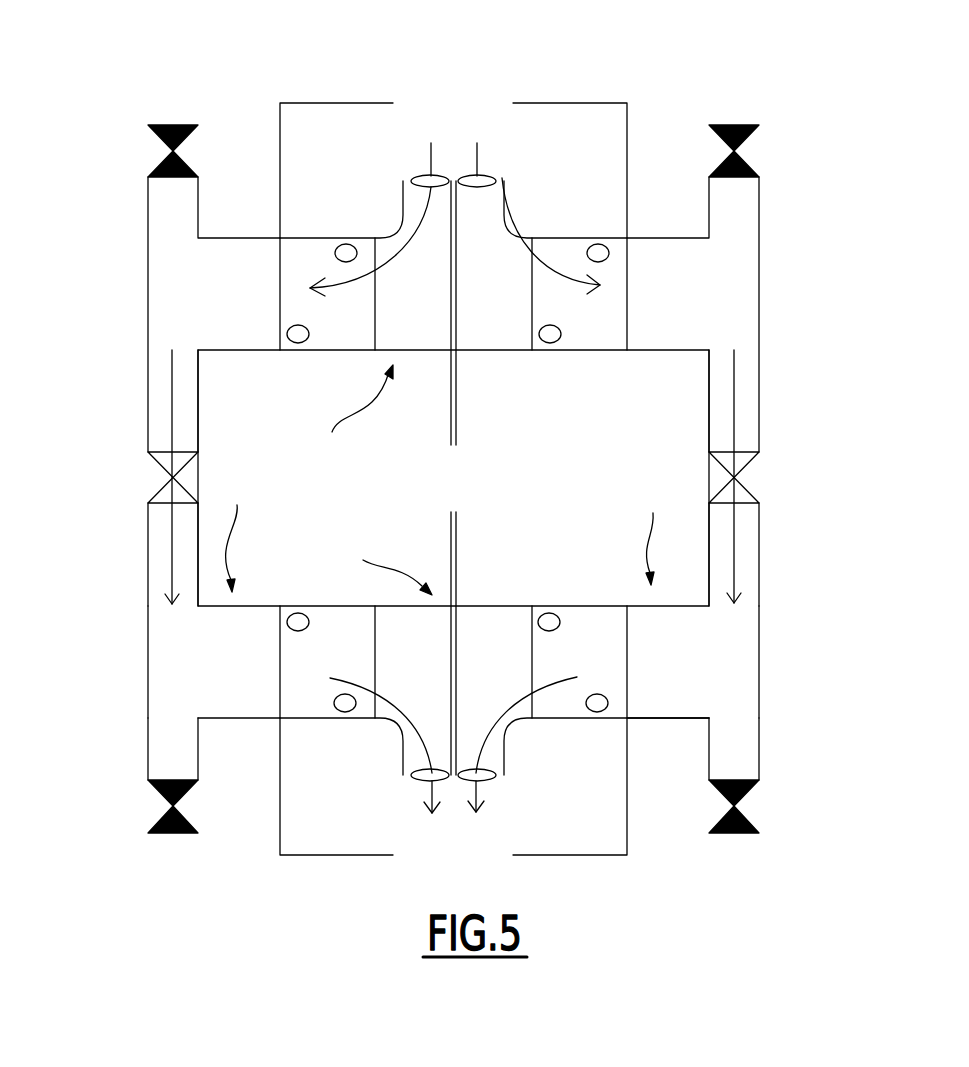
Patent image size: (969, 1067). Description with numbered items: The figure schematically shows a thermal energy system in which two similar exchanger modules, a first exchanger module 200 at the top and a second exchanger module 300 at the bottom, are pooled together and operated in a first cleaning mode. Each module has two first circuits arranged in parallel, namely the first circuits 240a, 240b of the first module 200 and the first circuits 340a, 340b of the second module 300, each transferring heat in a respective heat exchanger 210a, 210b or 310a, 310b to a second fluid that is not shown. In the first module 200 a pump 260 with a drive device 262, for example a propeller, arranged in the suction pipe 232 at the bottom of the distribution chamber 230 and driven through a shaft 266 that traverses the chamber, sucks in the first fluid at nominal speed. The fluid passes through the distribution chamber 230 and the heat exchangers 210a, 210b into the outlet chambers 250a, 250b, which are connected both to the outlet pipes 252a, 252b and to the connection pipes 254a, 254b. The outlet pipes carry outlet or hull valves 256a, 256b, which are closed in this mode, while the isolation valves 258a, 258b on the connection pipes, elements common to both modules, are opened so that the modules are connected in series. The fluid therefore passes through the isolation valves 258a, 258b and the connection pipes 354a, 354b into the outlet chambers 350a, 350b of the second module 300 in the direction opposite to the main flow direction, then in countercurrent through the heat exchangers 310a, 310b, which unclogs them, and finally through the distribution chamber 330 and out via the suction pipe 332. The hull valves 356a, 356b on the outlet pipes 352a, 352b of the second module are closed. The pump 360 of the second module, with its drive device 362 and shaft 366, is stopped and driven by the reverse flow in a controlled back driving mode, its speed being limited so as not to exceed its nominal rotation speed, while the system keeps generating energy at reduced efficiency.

The first exchanger module 200 is at (246, 165).
The second exchanger module 300 is at (243, 792).
The first circuit 240a is at (265, 105).
The first circuit 240b is at (642, 105).
The outlet chamber 250a is at (240, 308).
The outlet chamber 250b is at (733, 277).
The outlet pipe 252a is at (163, 212).
The outlet pipe 252b is at (743, 202).
The connection pipe 254a is at (163, 375).
The connection pipe 254b is at (747, 380).
The outlet valve 256a is at (167, 125).
The outlet valve 256b is at (733, 125).
The isolation valve 258a is at (163, 457).
The isolation valve 258b is at (747, 457).
The distribution chamber 230 is at (432, 308).
The suction pipe 232 is at (507, 223).
The drive device 262 is at (420, 182).
The shaft 266 is at (451, 422).
The heat exchanger 210a is at (322, 337).
The heat exchanger 210b is at (585, 333).
The pump 260 is at (345, 411).
The first circuit 340a is at (242, 534).
The first circuit 340b is at (661, 535).
The pump 360 is at (380, 565).
The shaft 366 is at (451, 535).
The distribution chamber 330 is at (432, 672).
The suction pipe 332 is at (395, 742).
The drive device 362 is at (412, 778).
The heat exchanger 310a is at (293, 612).
The heat exchanger 310b is at (598, 622).
The connection pipe 354a is at (163, 551).
The connection pipe 354b is at (745, 547).
The outlet chamber 350a is at (163, 652).
The outlet chamber 350b is at (725, 650).
The outlet pipe 352a is at (167, 741).
The outlet pipe 352b is at (742, 727).
The outlet valve 356a is at (157, 791).
The outlet valve 356b is at (752, 792).